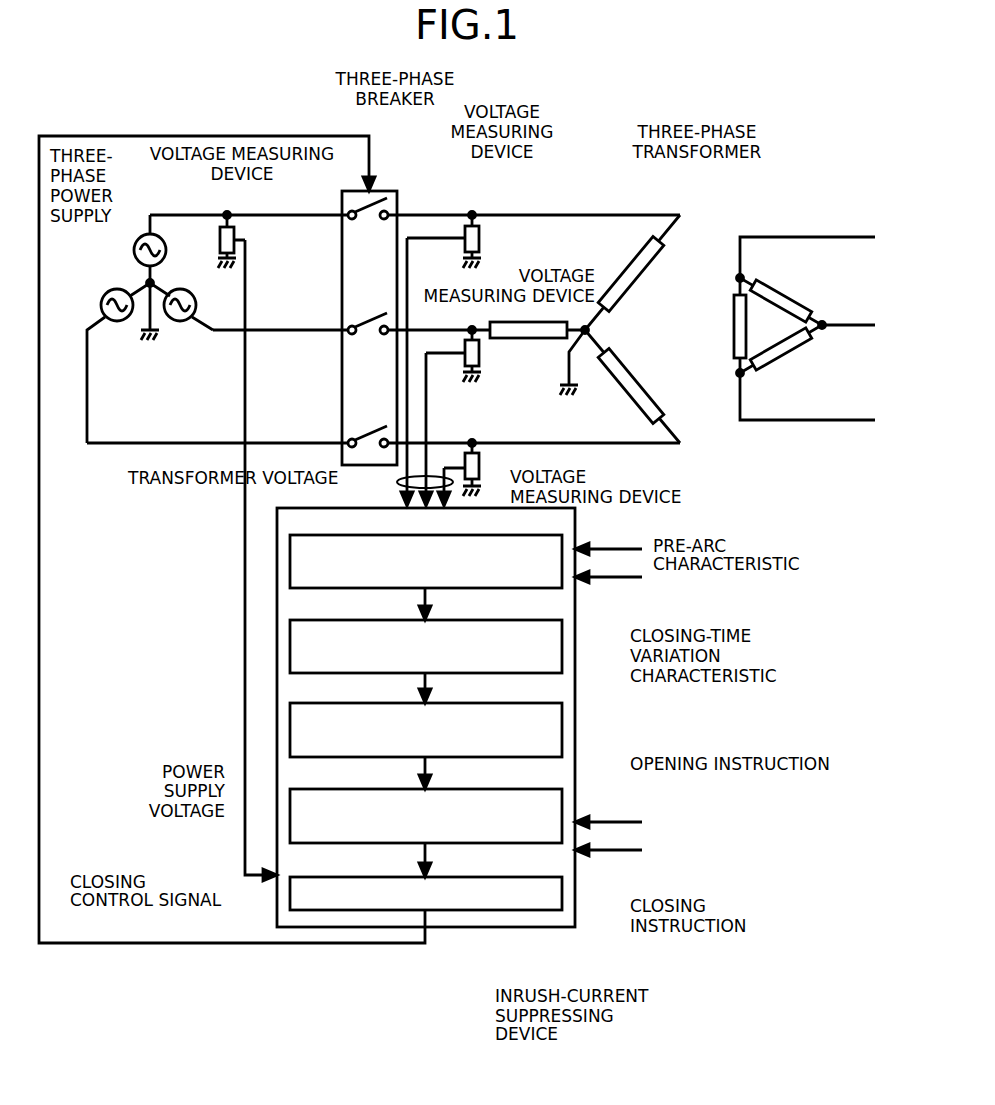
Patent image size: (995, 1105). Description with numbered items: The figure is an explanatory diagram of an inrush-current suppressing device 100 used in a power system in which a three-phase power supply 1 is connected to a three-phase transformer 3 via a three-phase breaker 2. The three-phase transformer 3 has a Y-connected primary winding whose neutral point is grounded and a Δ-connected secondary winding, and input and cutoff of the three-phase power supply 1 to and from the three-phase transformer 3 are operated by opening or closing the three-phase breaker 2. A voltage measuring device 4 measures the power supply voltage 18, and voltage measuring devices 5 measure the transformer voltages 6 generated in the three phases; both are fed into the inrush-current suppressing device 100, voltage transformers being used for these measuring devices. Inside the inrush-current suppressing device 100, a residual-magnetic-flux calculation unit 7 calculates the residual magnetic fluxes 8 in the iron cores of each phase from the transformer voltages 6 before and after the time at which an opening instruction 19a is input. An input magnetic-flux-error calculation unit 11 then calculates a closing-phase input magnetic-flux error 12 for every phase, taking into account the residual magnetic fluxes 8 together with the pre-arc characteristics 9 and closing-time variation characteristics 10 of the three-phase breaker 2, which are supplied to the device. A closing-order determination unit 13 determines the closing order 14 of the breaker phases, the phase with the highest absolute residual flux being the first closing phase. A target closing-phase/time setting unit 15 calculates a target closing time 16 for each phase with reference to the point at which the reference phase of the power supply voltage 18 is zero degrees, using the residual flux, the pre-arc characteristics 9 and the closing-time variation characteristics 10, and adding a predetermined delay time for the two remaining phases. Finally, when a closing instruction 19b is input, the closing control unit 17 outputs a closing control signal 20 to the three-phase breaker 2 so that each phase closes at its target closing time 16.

The three-phase power supply 1 is at (133, 254).
The three-phase breaker 2 is at (388, 185).
The three-phase transformer 3 is at (706, 216).
The voltage measuring device 4 is at (236, 232).
The voltage measuring device 5 is at (480, 238).
The transformer voltage 6 is at (400, 483).
The residual-magnetic-flux calculation unit 7 is at (486, 534).
The residual magnetic flux 8 is at (420, 600).
The pre-arc characteristic 9 is at (642, 549).
The closing-time variation characteristic 10 is at (632, 577).
The input magnetic-flux-error calculation unit 11 is at (488, 619).
The closing-phase input magnetic-flux error 12 is at (420, 683).
The closing-order determination unit 13 is at (488, 702).
The closing order 14 is at (420, 769).
The target closing-phase/time setting unit 15 is at (488, 788).
The target closing time 16 is at (420, 857).
The closing control unit 17 is at (488, 876).
The power supply voltage 18 is at (243, 860).
The opening instruction 19a is at (632, 822).
The closing instruction 19b is at (632, 850).
The closing control signal 20 is at (58, 943).
The inrush-current suppressing device 100 is at (497, 927).